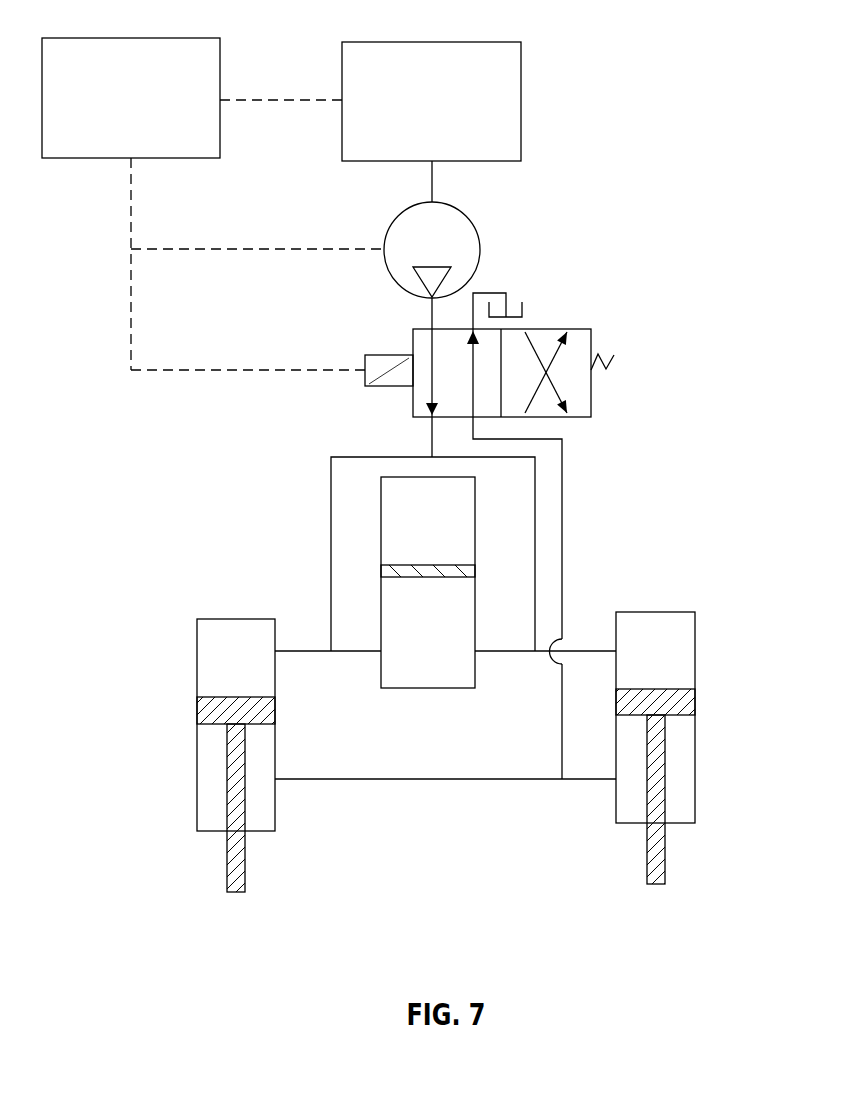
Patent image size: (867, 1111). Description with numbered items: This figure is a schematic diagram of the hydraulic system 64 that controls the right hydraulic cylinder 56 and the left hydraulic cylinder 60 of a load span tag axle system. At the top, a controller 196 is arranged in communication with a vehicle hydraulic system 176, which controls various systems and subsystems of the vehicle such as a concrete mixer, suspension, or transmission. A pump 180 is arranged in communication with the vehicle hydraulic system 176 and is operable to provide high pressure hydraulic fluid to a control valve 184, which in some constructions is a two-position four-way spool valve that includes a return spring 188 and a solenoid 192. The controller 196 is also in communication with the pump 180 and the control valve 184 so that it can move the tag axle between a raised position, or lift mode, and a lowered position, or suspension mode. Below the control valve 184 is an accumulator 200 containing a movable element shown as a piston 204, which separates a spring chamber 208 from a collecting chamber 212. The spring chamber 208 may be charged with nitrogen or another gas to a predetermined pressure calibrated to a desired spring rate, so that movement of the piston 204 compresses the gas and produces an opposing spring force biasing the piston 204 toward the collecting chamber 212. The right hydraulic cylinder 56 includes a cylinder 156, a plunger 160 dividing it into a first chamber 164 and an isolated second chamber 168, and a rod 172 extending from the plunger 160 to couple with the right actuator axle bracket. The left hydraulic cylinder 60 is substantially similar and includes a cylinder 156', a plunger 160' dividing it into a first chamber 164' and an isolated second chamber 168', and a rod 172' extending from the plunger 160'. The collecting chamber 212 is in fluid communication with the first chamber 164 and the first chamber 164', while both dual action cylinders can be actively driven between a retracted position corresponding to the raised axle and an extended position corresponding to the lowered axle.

The controller 196 is at (108, 37).
The vehicle hydraulic system 176 is at (402, 41).
The hydraulic system 64 is at (628, 150).
The pump 180 is at (397, 222).
The control valve 184 is at (608, 320).
The return spring 188 is at (613, 362).
The solenoid 192 is at (377, 387).
The accumulator 200 is at (454, 618).
The piston 204 is at (477, 574).
The spring chamber 208 is at (447, 532).
The collecting chamber 212 is at (447, 641).
The right hydraulic cylinder 56 is at (699, 731).
The left hydraulic cylinder 60 is at (208, 743).
The cylinder 156 is at (655, 700).
The cylinder 156' is at (235, 707).
The plunger 160 is at (694, 690).
The plunger 160' is at (196, 704).
The first chamber 164 is at (655, 650).
The first chamber 164' is at (236, 658).
The second chamber 168 is at (681, 770).
The second chamber 168' is at (196, 778).
The rod 172 is at (698, 799).
The rod 172' is at (277, 813).